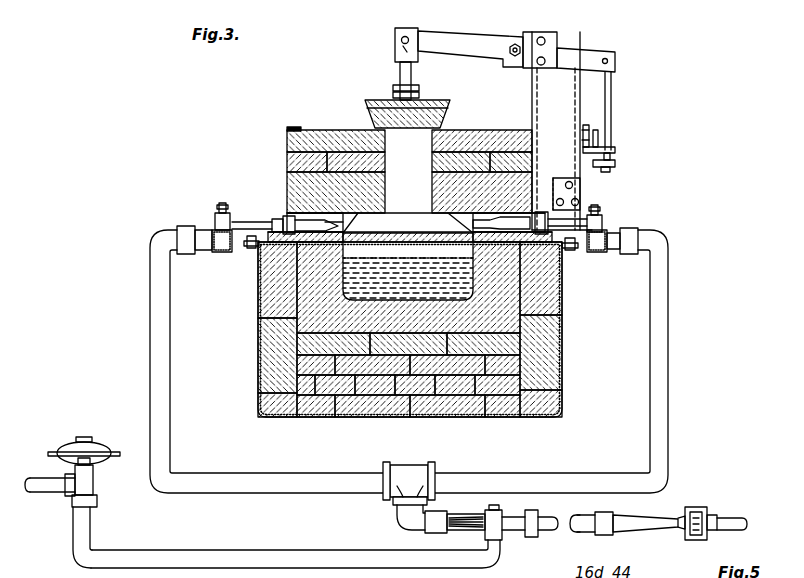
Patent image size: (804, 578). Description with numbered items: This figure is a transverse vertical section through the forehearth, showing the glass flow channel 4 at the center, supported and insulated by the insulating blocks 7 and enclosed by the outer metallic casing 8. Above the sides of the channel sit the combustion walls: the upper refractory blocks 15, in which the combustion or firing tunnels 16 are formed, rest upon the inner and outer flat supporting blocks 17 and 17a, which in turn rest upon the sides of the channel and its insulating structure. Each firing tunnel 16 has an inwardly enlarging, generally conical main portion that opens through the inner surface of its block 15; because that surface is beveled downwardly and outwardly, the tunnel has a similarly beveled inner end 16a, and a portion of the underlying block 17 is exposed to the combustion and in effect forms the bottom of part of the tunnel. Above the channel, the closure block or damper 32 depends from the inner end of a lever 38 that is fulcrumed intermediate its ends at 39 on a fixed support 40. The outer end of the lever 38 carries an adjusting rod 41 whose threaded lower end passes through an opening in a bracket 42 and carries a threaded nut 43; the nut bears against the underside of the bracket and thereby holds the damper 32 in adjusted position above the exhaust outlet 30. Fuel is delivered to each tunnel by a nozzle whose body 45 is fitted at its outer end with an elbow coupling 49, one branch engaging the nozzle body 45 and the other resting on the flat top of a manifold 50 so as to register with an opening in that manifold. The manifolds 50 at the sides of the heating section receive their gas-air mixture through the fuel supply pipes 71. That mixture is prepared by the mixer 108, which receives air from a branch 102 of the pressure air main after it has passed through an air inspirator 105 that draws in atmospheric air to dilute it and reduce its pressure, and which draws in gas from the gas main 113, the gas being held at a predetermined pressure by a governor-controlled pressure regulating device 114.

The refractory glass flow channel 4 is at (325, 308).
The insulating blocks 7 is at (490, 383).
The outer metallic casing 8 is at (360, 418).
The upper refractory blocks 15 is at (538, 212).
The combustion or firing tunnel 16 is at (472, 218).
The beveled inner end of tunnel 16a is at (345, 222).
The inner flat supporting block 17 is at (355, 228).
The outer flat supporting block 17a is at (266, 218).
The exhaust outlet 30 is at (358, 148).
The closure block or damper 32 is at (376, 100).
The lever 38 is at (458, 40).
The fulcrum 39 is at (513, 43).
The stationary support 40 is at (540, 93).
The adjusting rod 41 is at (612, 92).
The bracket 42 is at (606, 147).
The threaded nut 43 is at (616, 163).
The nozzle body 45 is at (252, 237).
The elbow coupling 49 is at (215, 222).
The manifold 50 is at (228, 254).
The fuel supply pipes 71 is at (153, 329).
The air main branch 102 is at (733, 513).
The air inspirator 105 is at (655, 520).
The mixer 108 is at (470, 515).
The gas main 113 is at (36, 494).
The governor-controlled pressure regulating device 114 is at (96, 475).